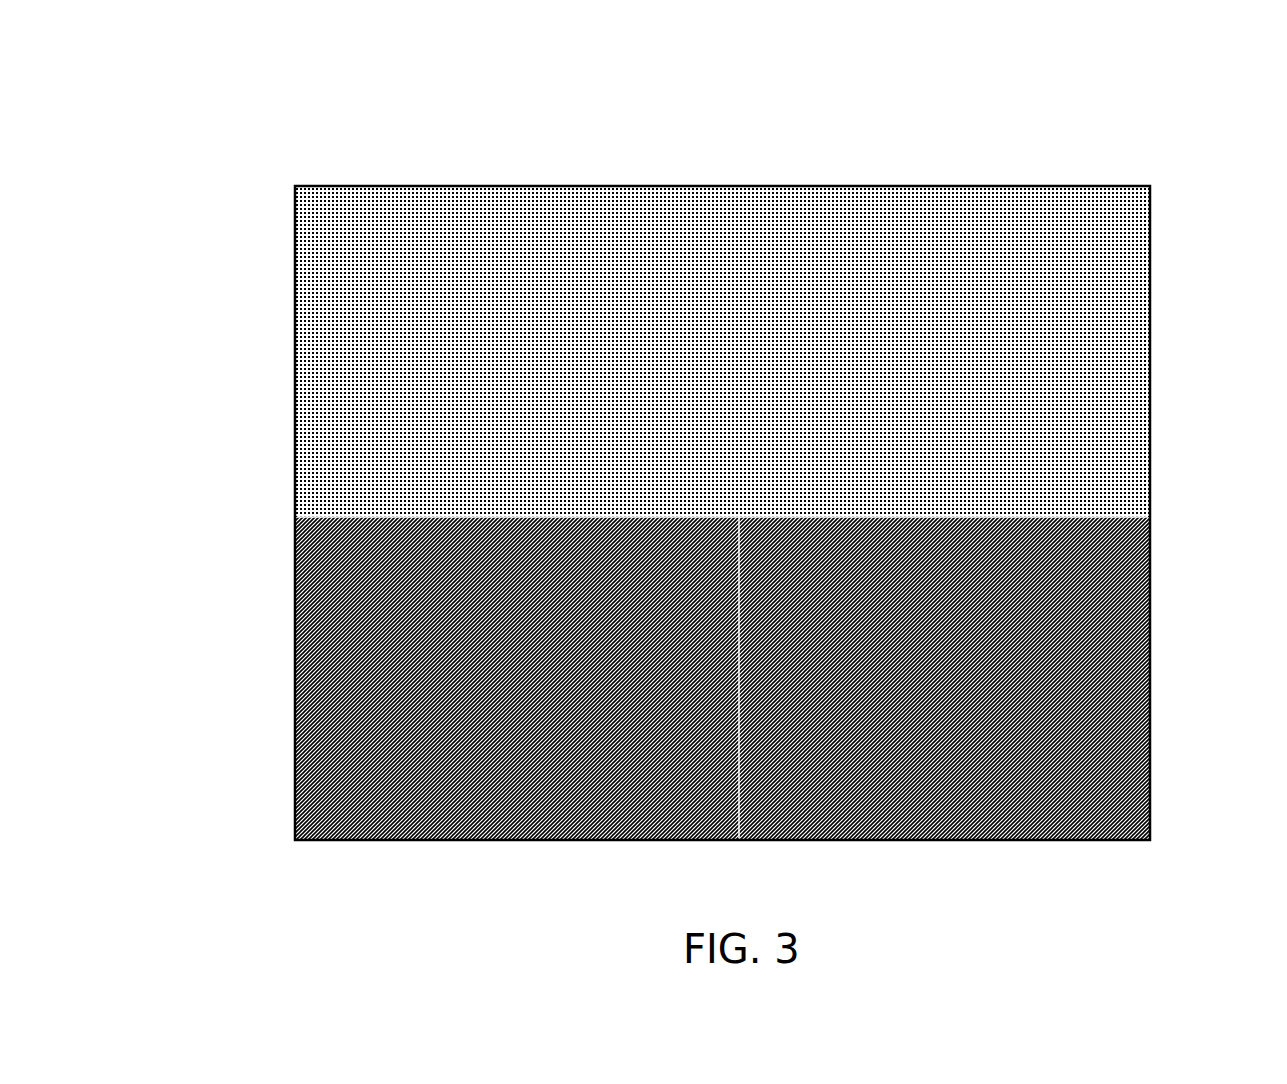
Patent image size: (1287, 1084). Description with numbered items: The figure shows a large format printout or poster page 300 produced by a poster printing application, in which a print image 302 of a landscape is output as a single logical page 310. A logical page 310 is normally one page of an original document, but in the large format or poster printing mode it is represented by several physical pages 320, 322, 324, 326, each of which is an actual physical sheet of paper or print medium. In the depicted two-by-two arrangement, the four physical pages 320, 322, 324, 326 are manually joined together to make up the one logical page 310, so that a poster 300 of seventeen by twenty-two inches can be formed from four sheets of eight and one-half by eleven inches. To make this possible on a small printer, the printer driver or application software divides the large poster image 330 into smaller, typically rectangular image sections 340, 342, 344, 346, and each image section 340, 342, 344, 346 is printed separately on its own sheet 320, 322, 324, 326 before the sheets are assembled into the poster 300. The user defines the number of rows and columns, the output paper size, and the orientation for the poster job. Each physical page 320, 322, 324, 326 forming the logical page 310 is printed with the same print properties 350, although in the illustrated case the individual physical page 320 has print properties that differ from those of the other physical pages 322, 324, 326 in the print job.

The large format printout or poster page 300 is at (1068, 81).
The print image 302 is at (1176, 813).
The logical page 310 is at (1167, 382).
The physical page 320 is at (908, 849).
The physical page 322 is at (482, 844).
The physical page 324 is at (434, 176).
The physical page 326 is at (914, 176).
The poster image 330 is at (1030, 800).
The image section 340 is at (1125, 740).
The image section 342 is at (290, 722).
The image section 344 is at (305, 410).
The image section 346 is at (1125, 432).
The print properties 350 is at (265, 626).